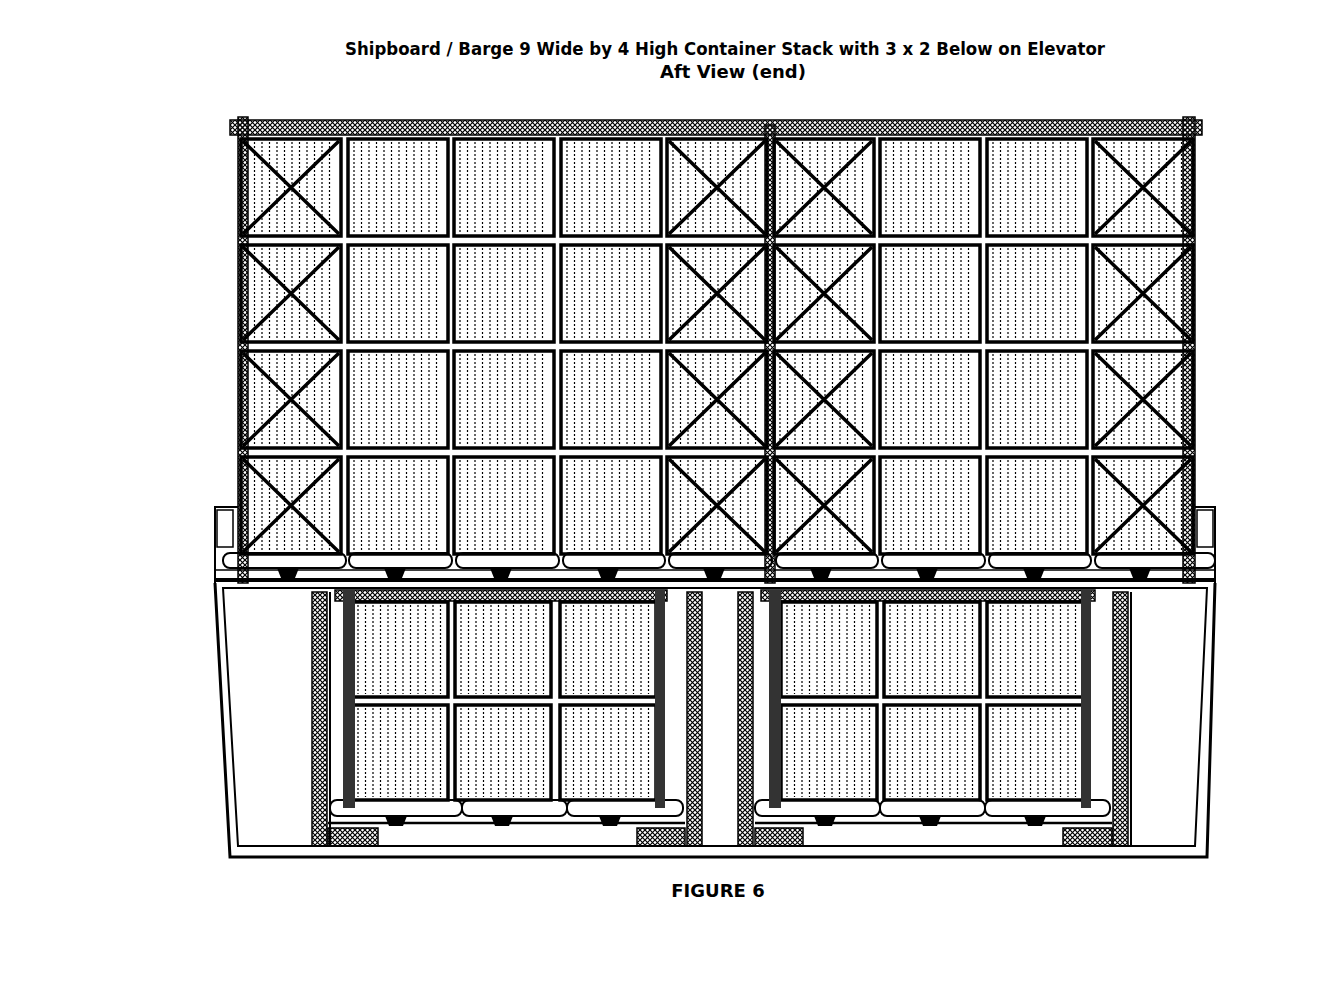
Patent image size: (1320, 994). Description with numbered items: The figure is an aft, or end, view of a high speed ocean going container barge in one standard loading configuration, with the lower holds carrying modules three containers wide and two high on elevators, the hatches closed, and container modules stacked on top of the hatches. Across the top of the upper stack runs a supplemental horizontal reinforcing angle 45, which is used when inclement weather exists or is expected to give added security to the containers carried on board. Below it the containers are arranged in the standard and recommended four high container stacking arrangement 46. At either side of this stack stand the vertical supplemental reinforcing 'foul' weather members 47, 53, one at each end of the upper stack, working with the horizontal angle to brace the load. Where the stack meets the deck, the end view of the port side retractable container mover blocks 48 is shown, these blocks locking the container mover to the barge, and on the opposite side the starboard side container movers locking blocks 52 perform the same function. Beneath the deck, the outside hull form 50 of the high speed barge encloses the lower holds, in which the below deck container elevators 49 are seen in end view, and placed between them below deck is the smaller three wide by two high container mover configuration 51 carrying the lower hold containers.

The supplemental horizontal reinforcing angle 45 is at (306, 121).
The four high container stacking arrangement 46 is at (400, 320).
The vertical supplemental reinforcing 'foul' weather member 47 is at (240, 336).
The port side retractable container mover blocks 48 is at (215, 507).
The below deck container elevators 49 is at (313, 640).
The outside hull form 50 is at (224, 738).
The three wide by two high container mover configuration 51 is at (453, 806).
The starboard side container movers locking blocks 52 is at (1215, 513).
The vertical supplemental reinforcing 'foul' weather member 53 is at (1196, 341).